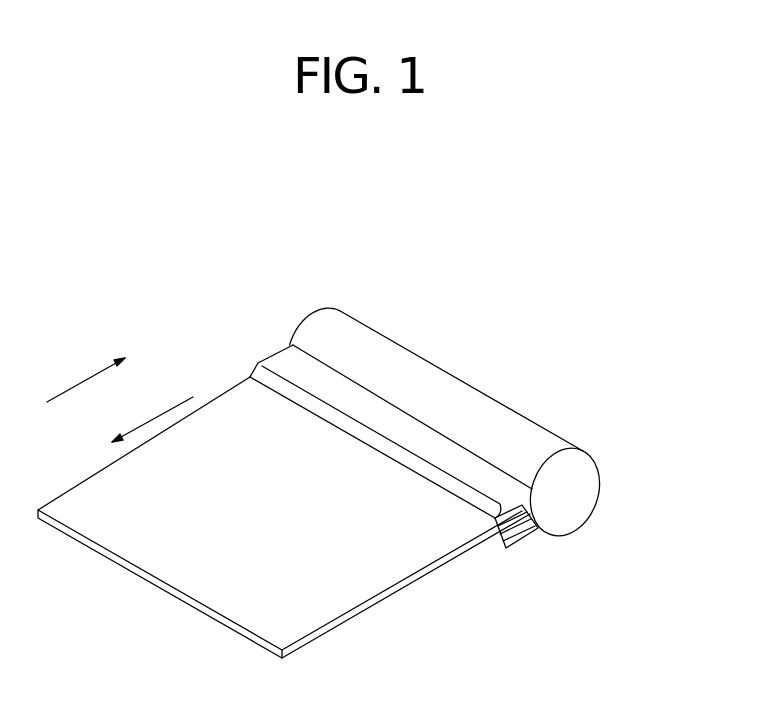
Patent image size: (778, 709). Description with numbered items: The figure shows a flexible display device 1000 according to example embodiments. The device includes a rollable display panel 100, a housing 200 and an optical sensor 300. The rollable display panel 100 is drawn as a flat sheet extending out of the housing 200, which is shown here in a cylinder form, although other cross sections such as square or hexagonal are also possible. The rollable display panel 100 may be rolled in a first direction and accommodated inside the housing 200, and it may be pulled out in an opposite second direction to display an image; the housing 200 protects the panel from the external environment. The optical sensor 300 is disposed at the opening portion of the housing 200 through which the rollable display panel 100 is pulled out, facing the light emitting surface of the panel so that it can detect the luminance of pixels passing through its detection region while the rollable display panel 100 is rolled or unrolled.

The flexible display device 1000 is at (509, 329).
The rollable display panel 100 is at (387, 597).
The housing 200 is at (583, 483).
The optical sensor 300 is at (530, 530).